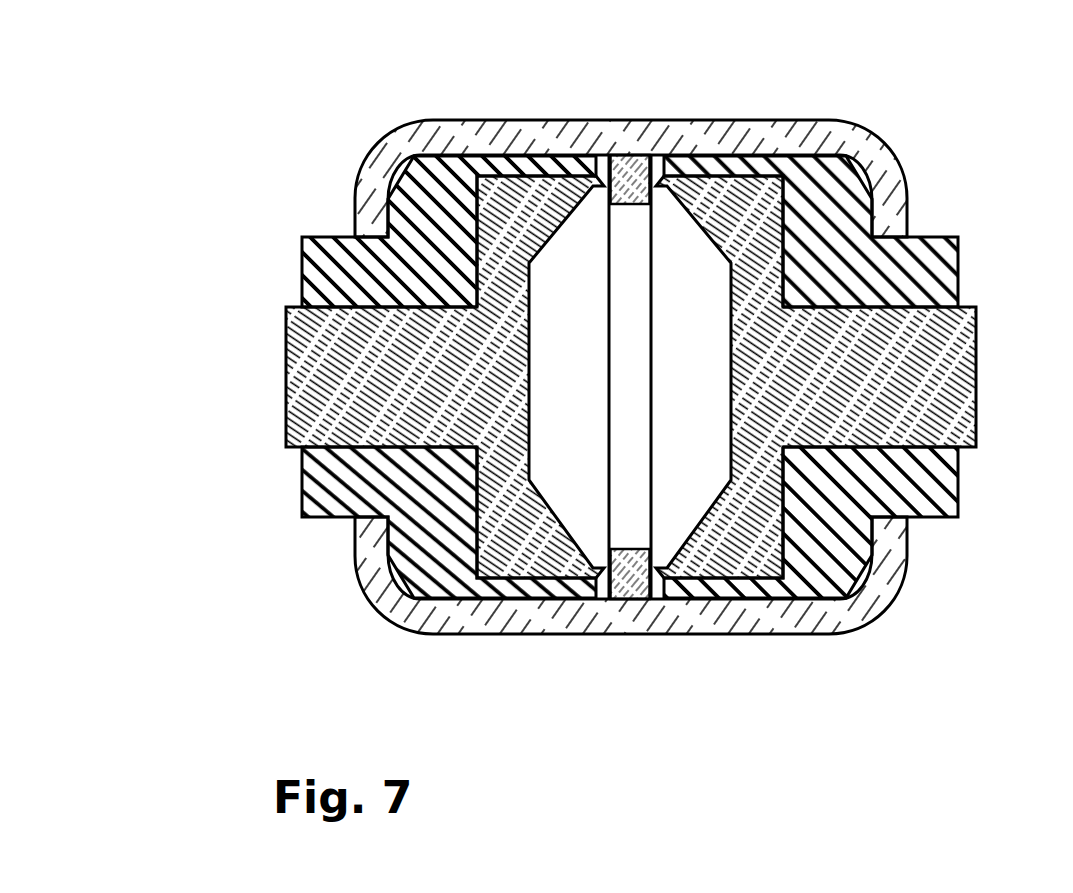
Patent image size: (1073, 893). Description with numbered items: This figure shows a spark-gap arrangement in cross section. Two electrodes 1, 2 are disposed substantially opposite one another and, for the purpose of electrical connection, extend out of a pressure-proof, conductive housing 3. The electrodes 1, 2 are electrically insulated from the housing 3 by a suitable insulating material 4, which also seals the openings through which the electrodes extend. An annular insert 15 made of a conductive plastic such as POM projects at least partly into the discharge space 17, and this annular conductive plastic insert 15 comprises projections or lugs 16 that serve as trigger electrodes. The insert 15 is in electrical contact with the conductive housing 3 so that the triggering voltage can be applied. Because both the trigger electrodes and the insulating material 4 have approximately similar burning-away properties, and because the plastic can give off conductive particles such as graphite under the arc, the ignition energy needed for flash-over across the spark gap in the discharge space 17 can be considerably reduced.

The electrode 1 is at (337, 378).
The electrode 2 is at (950, 375).
The conductive housing 3 is at (840, 128).
The insulating material 4 is at (830, 200).
The annular conductive plastic insert 15 is at (636, 487).
The projections or lugs 16 is at (633, 196).
The discharge space 17 is at (577, 258).